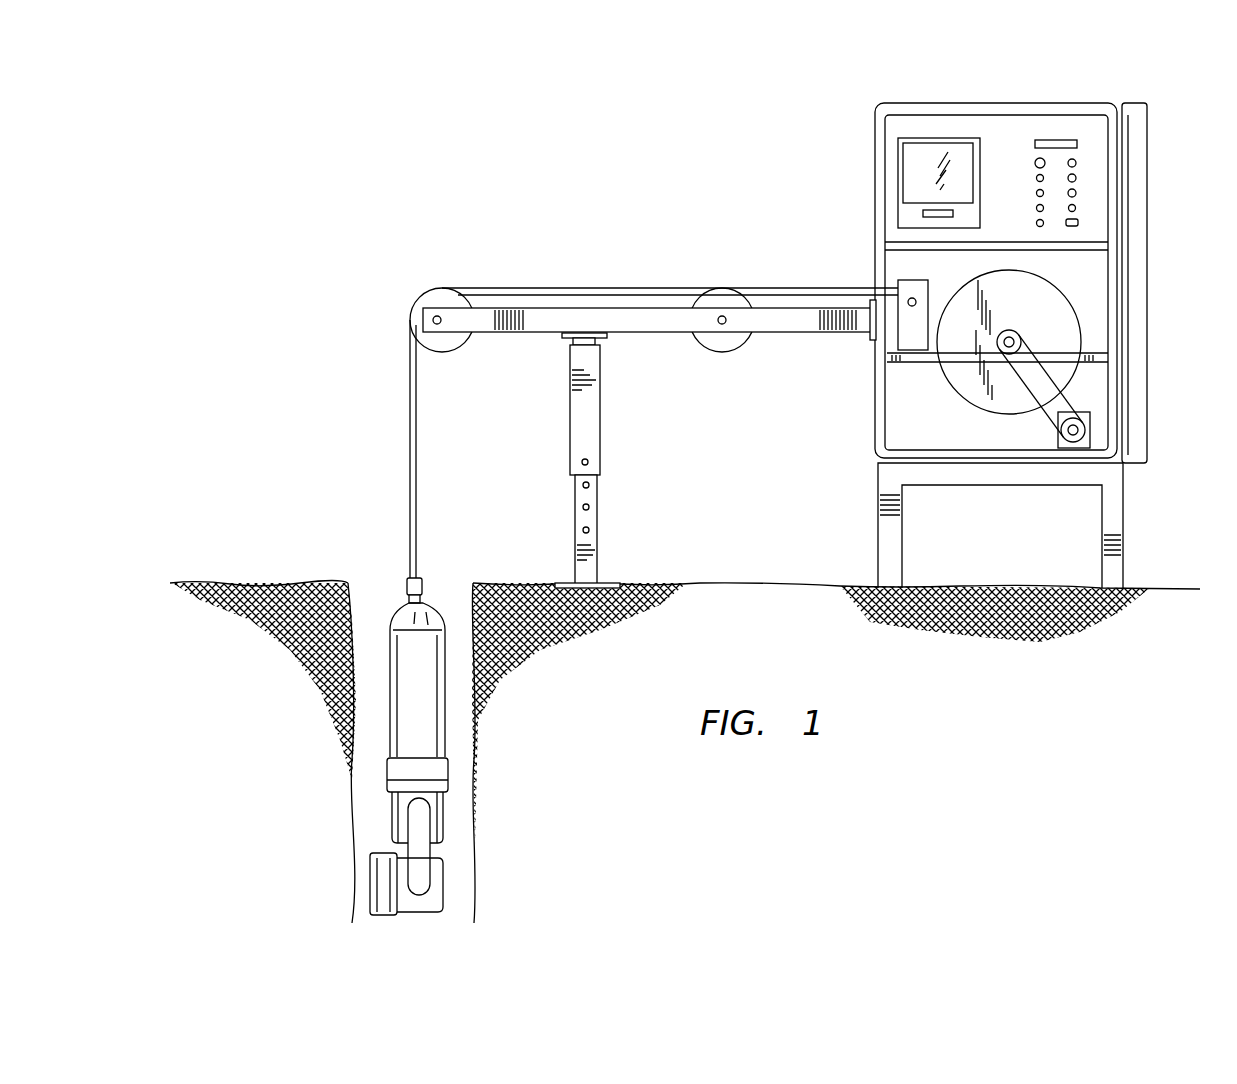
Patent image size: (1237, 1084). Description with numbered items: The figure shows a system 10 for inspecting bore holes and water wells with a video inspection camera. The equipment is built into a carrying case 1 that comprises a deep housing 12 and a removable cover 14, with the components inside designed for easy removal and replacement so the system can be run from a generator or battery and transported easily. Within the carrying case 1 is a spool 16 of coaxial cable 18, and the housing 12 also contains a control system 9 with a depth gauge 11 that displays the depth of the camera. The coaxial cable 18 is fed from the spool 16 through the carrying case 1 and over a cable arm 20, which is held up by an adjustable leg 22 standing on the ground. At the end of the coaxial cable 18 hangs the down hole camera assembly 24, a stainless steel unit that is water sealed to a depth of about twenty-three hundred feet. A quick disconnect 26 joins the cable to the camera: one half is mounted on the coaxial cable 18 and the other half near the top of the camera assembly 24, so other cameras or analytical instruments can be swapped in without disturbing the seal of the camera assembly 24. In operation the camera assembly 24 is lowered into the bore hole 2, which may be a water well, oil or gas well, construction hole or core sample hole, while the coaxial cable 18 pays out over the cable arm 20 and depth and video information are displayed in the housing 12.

The carrying case 1 is at (860, 151).
The bore hole 2 is at (352, 838).
The control system 9 is at (1063, 254).
The system 10 is at (320, 457).
The depth gauge 11 is at (1035, 146).
The deep housing 12 is at (874, 208).
The removable cover 14 is at (1150, 211).
The spool 16 is at (965, 392).
The coaxial cable 18 is at (598, 288).
The cable arm 20 is at (672, 335).
The adjustable leg 22 is at (570, 418).
The down hole camera assembly 24 is at (390, 620).
The quick disconnect 26 is at (420, 582).